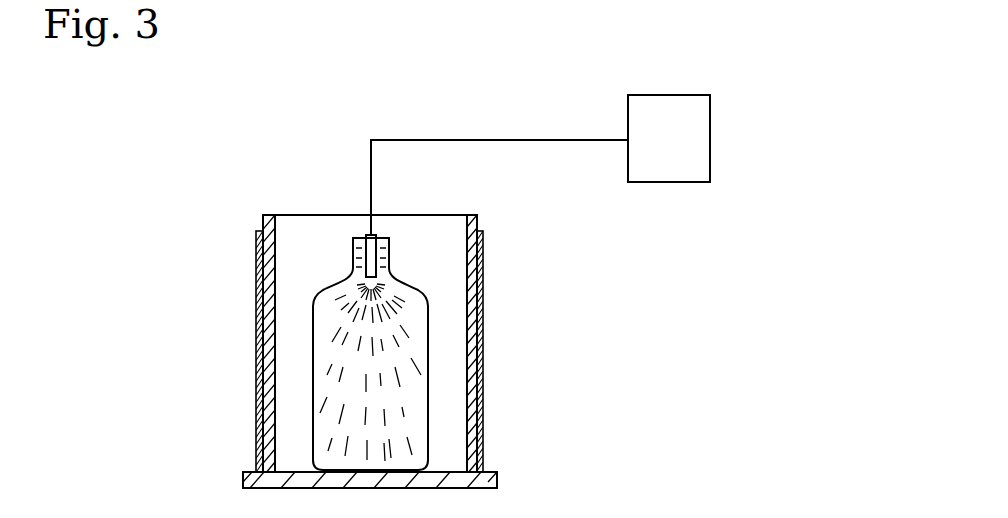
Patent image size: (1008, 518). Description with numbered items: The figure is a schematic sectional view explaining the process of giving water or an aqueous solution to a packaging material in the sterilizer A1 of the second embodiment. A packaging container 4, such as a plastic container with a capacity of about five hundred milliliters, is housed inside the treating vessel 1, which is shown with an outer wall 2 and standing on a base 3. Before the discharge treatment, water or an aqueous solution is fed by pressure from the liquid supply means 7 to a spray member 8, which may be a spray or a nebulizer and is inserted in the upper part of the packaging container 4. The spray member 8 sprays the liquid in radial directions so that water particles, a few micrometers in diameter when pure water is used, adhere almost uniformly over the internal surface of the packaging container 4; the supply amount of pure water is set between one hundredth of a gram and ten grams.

The sterilizer A1 is at (303, 190).
The treating vessel 1 is at (473, 308).
The outer chamber wall 2 is at (483, 352).
The base plate 3 is at (497, 480).
The packaging container 4 is at (413, 284).
The liquid supply means 7 is at (675, 172).
The spray member 8 is at (366, 263).